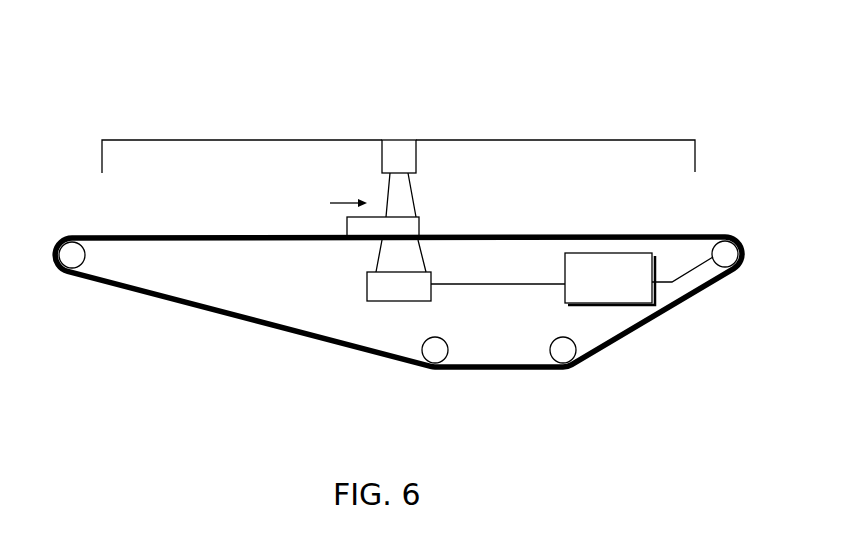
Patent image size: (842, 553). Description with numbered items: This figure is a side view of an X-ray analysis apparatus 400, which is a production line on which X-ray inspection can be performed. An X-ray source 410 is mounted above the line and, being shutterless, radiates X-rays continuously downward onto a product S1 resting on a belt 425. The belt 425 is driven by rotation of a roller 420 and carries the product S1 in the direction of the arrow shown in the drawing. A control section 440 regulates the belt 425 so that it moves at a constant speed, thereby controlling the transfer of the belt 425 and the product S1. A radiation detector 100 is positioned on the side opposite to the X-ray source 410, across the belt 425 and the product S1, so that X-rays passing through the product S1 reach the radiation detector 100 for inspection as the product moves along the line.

The X-ray analysis apparatus 400 is at (398, 83).
The X-ray source 410 is at (382, 160).
The roller 420 is at (728, 237).
The belt 425 is at (190, 235).
The control section 440 is at (565, 265).
The radiation detector 100 is at (367, 292).
The product S1 is at (419, 217).